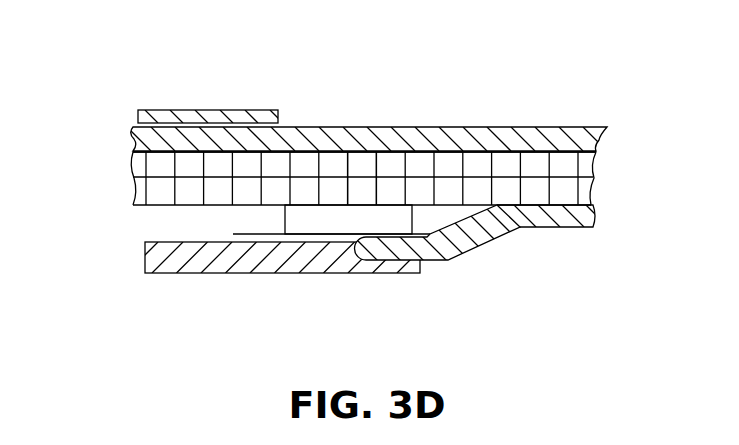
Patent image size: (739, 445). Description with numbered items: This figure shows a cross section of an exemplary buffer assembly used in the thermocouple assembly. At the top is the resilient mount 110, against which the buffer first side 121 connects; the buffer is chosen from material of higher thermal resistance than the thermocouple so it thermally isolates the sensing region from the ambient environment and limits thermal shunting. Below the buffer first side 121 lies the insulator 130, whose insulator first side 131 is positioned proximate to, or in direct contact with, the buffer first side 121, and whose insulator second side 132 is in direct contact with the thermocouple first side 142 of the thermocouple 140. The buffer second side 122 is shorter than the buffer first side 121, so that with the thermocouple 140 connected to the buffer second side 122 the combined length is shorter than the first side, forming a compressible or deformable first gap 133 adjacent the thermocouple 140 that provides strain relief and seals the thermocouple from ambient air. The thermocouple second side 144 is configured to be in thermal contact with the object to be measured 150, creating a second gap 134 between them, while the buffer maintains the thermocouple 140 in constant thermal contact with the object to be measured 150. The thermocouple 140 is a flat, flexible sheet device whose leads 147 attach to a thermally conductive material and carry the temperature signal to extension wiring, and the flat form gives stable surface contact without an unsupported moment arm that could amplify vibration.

The resilient mount 110 is at (199, 92).
The buffer first side 121 is at (508, 137).
The buffer second side 122 is at (500, 222).
The insulator 130 is at (122, 177).
The insulator first side 131 is at (249, 152).
The insulator second side 132 is at (208, 218).
The first gap 133 is at (455, 215).
The second gap 134 is at (233, 232).
The thermocouple 140 is at (390, 212).
The thermocouple first side 142 is at (358, 204).
The thermocouple second side 144 is at (293, 236).
The leads 147 is at (228, 237).
The object to be measured 150 is at (243, 273).